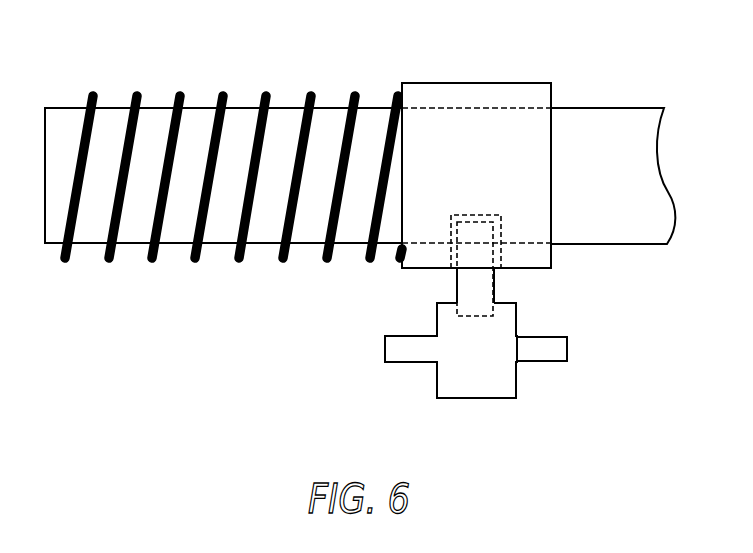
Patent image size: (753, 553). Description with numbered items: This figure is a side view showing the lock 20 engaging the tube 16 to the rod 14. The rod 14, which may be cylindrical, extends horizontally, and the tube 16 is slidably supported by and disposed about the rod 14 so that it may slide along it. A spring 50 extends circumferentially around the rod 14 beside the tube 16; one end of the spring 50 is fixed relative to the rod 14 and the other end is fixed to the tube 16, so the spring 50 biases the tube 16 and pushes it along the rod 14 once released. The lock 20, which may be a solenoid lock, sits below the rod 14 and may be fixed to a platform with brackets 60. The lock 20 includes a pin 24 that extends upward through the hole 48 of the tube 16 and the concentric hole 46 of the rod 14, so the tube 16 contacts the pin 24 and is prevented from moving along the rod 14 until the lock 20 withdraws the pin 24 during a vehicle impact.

The rod 14 is at (607, 107).
The tube 16 is at (505, 82).
The lock 20 is at (517, 383).
The pin 24 is at (457, 280).
The hole 46 is at (503, 223).
The hole 48 is at (503, 257).
The spring 50 is at (138, 92).
The brackets 60 is at (567, 350).